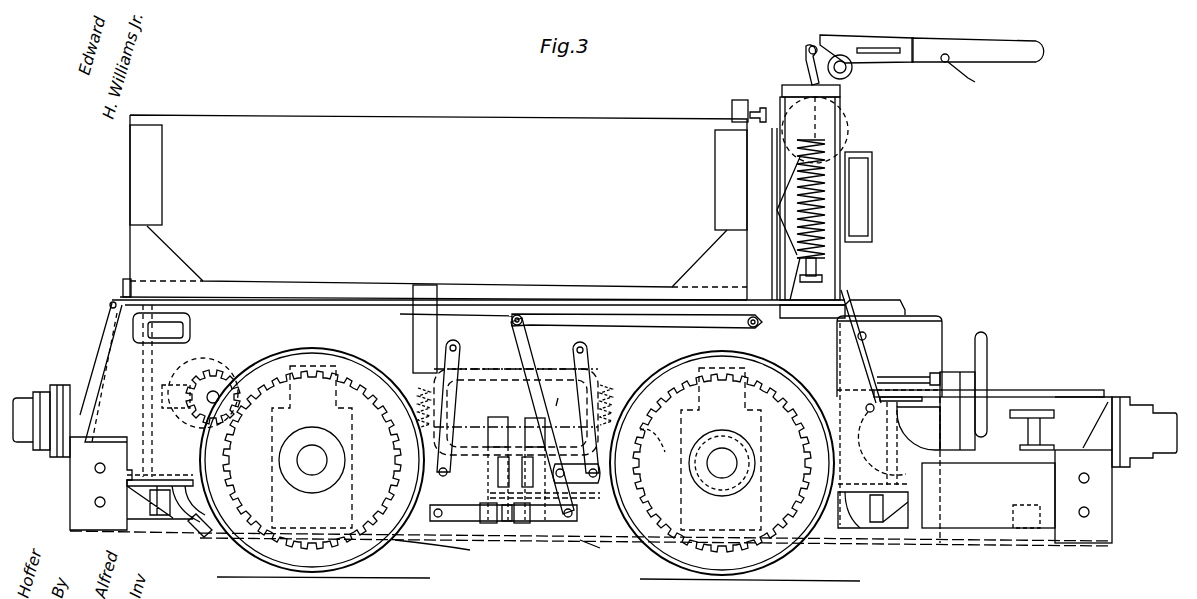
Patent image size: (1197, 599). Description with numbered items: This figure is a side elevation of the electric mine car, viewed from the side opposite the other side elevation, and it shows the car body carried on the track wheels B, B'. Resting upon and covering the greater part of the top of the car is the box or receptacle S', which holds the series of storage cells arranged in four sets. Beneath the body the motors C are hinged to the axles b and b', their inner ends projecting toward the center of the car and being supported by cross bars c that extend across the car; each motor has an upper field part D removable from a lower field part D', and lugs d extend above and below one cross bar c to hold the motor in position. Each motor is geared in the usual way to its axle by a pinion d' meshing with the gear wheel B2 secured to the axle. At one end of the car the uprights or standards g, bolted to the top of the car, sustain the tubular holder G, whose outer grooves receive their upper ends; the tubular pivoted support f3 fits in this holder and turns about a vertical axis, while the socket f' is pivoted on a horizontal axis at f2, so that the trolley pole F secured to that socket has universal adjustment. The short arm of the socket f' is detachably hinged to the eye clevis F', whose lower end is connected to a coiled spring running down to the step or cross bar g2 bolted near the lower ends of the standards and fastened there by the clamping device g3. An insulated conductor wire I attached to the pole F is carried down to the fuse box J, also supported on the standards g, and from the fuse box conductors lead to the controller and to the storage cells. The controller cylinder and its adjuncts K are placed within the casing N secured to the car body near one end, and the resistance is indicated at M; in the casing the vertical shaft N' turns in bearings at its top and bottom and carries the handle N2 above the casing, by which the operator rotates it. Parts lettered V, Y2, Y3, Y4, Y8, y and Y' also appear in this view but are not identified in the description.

The box or receptacle S' is at (443, 200).
The eye clevis F' is at (978, 40).
The socket f' is at (866, 37).
The horizontal pivot f2 is at (851, 72).
The pivoted support f3 is at (800, 84).
The trolley pole F is at (830, 27).
The insulated conductor wire I is at (978, 81).
The tubular socket G is at (842, 113).
The valve V is at (848, 143).
The uprights or standards g is at (840, 228).
The fuse box J is at (858, 197).
The step or cross bar g2 is at (830, 260).
The clamping device g3 is at (815, 287).
The casing N is at (889, 420).
The handle N2 is at (848, 292).
The vertically arranged shaft N' is at (875, 298).
The rod Y8 is at (911, 377).
The lever Y3 is at (788, 391).
The controller cylinder K is at (988, 495).
The resistance M is at (180, 375).
The gear wheel B2 is at (232, 484).
The axle b' is at (312, 474).
The axle b is at (709, 463).
The track wheel B' is at (312, 460).
The track wheel B is at (722, 463).
The pinion d' is at (657, 441).
The equalizer beam Y2 is at (663, 320).
The hanger link y is at (586, 352).
The motor C is at (495, 480).
The cross bar c is at (527, 470).
The upper field part D is at (508, 403).
The lower field part D' is at (497, 476).
The lugs or projections d is at (516, 477).
The rod Y' is at (503, 492).
The coupling Y4 is at (482, 506).